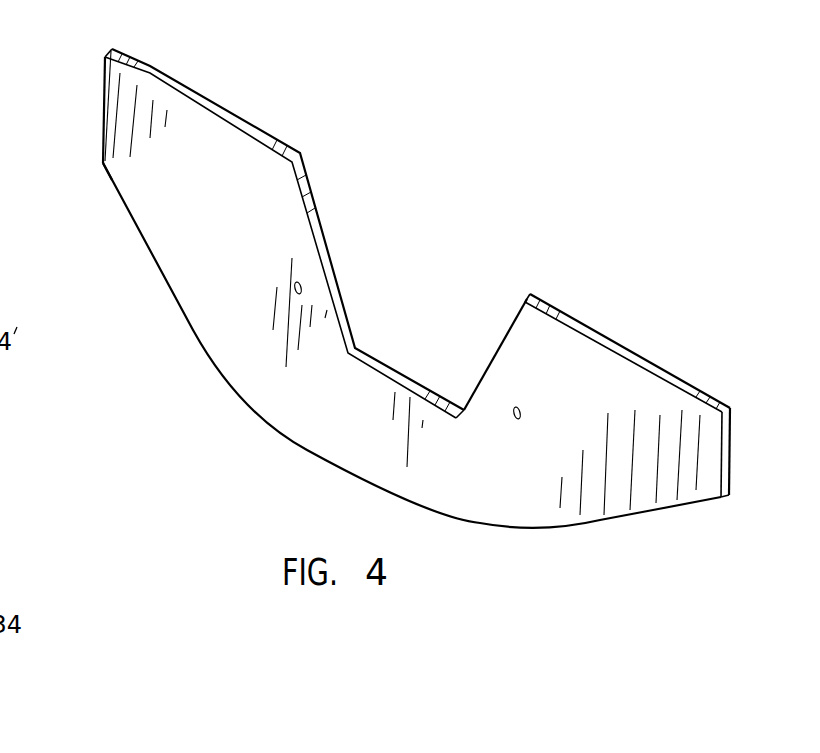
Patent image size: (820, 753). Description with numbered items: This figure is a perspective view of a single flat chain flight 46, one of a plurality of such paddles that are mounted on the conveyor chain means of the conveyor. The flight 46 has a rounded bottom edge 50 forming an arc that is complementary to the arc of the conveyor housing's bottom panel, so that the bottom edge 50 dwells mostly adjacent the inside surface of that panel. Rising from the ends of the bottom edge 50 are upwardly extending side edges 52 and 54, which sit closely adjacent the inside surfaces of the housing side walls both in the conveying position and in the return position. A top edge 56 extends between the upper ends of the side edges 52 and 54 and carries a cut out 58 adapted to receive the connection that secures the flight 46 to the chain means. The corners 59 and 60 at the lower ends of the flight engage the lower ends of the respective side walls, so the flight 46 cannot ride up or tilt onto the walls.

The chain flight 46 is at (556, 548).
The rounded bottom edge 50 is at (305, 448).
The side edge 52 is at (102, 125).
The side edge 54 is at (730, 450).
The top edge 56 is at (608, 332).
The cut out 58 is at (428, 307).
The corner 59 is at (102, 162).
The corner 60 is at (729, 496).